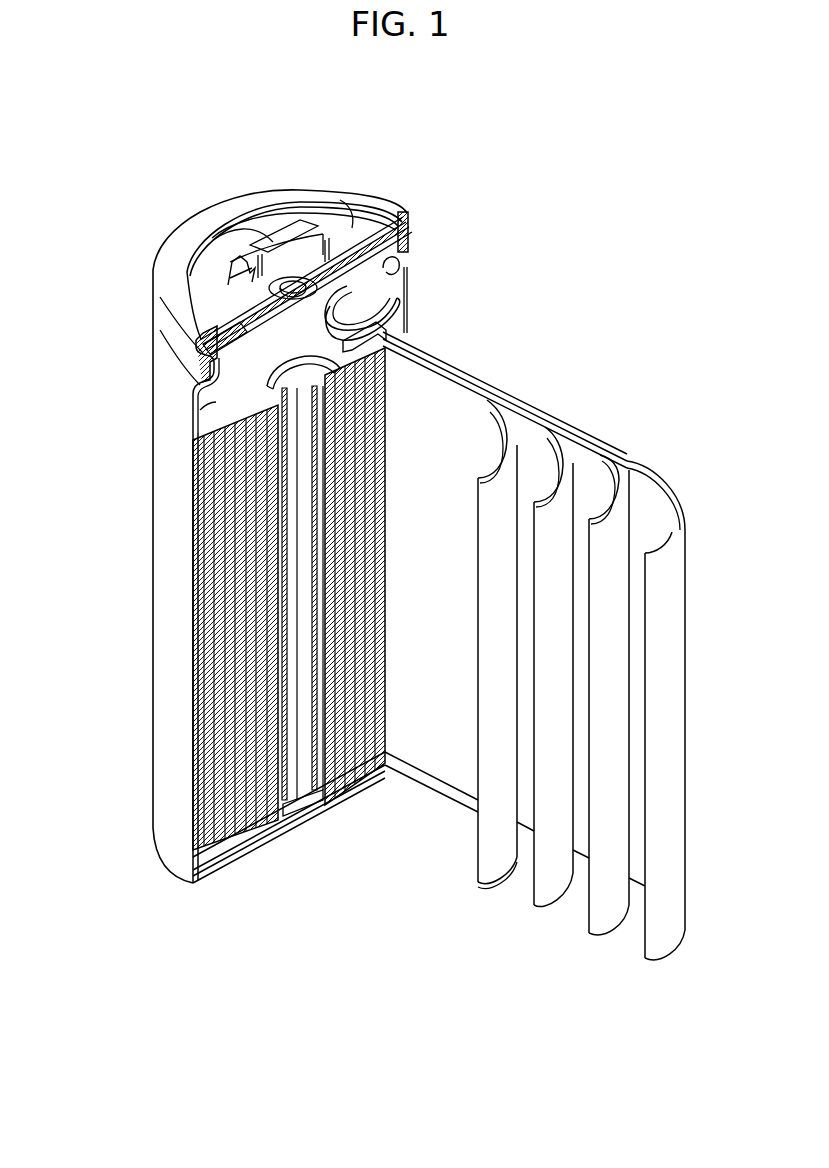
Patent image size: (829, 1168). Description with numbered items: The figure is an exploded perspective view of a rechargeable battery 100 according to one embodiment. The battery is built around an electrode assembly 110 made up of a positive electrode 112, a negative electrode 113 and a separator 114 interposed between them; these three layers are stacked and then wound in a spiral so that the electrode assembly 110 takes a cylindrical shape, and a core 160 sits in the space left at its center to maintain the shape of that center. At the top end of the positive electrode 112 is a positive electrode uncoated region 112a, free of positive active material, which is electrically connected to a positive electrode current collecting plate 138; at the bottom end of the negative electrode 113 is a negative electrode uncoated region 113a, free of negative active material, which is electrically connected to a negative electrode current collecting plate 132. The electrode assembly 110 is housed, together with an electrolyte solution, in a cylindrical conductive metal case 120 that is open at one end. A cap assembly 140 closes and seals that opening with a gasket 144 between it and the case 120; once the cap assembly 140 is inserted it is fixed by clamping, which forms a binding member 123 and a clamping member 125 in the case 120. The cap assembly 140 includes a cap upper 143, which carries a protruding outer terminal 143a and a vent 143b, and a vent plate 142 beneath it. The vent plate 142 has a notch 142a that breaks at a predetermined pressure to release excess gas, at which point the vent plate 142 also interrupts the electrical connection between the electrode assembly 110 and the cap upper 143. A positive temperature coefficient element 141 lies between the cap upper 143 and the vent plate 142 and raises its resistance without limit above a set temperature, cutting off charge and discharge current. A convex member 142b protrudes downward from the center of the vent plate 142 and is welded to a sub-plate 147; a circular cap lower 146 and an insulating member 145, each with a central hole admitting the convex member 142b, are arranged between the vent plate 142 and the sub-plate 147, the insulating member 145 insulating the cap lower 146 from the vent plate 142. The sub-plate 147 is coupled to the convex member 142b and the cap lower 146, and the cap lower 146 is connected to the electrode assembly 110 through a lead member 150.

The rechargeable battery 100 is at (320, 100).
The electrode assembly 110 is at (353, 774).
The positive electrode 112 is at (604, 930).
The positive electrode uncoated region 112a is at (593, 453).
The negative electrode 113 is at (477, 863).
The negative electrode uncoated region 113a is at (487, 885).
The separator 114 is at (548, 893).
The case 120 is at (162, 546).
The binding member 123 is at (207, 367).
The clamping member 125 is at (197, 342).
The negative electrode current collecting plate 132 is at (222, 850).
The positive electrode current collecting plate 138 is at (216, 404).
The cap assembly 140 is at (477, 165).
The positive temperature coefficient element 141 is at (347, 223).
The vent plate 142 is at (406, 236).
The notch 142a is at (295, 285).
The convex member 142b is at (273, 238).
The cap upper 143 is at (348, 225).
The protruding outer terminal 143a is at (272, 240).
The vent 143b is at (230, 264).
The gasket 144 is at (187, 327).
The insulating member 145 is at (388, 263).
The cap lower 146 is at (341, 291).
The sub-plate 147 is at (391, 308).
The lead member 150 is at (392, 322).
The core 160 is at (299, 800).